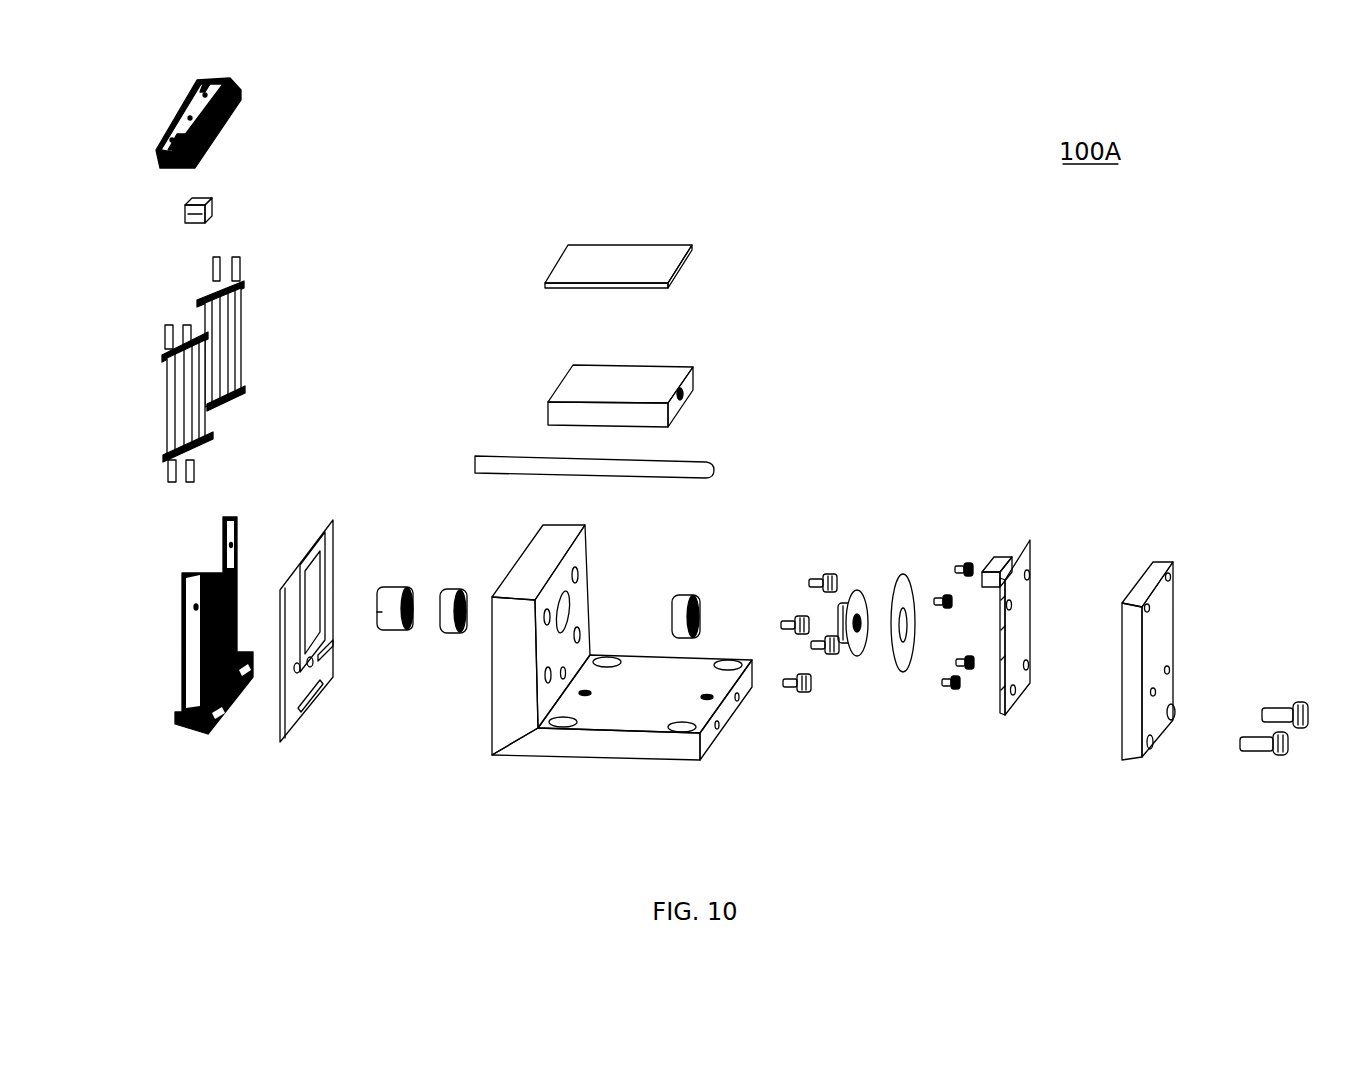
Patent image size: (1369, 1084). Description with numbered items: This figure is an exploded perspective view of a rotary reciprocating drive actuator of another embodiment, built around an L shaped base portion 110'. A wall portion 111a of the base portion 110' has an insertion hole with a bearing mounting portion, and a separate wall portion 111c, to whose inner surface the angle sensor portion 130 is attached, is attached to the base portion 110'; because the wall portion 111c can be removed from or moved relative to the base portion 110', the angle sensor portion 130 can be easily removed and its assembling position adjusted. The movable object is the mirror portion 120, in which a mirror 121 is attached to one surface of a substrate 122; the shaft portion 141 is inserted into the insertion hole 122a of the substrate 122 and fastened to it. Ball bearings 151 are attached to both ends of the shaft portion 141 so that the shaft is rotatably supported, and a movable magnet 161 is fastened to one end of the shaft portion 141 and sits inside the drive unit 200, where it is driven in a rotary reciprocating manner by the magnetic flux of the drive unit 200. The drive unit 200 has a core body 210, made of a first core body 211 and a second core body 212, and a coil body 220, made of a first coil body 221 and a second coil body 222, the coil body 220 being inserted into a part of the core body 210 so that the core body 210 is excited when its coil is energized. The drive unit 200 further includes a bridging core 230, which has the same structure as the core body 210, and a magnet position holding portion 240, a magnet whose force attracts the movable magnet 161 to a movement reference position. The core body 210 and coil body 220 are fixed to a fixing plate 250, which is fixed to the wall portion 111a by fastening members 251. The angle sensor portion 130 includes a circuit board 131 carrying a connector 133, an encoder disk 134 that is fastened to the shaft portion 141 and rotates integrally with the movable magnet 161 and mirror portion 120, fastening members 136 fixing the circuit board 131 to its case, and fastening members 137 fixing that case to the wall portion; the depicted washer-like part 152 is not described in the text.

The drive unit 200 is at (375, 805).
The core body 210 is at (154, 624).
The first core body 211 is at (188, 690).
The second core body 212 is at (222, 523).
The coil body 220 is at (195, 369).
The first coil body 221 is at (180, 400).
The second coil body 222 is at (238, 343).
The bridging core 230 is at (186, 111).
The magnet position holding portion 240 is at (185, 212).
The fixing plate 250 is at (313, 680).
The fastening members 251 is at (790, 682).
The L shaped base portion 110' is at (576, 666).
The wall portion 111a is at (517, 715).
The wall portion 111c is at (1130, 735).
The movable magnet 161 is at (392, 597).
The ball bearings 151 is at (452, 597).
The bushing 152 is at (860, 592).
The mirror portion 120 is at (798, 240).
The mirror 121 is at (660, 266).
The substrate 122 is at (674, 395).
The insertion hole 122a is at (672, 376).
The shaft portion 141 is at (690, 468).
The angle sensor portion 130 is at (892, 805).
The circuit board 131 is at (1012, 715).
The connector 133 is at (997, 567).
The encoder disk 134 is at (903, 672).
The fastening members 136 is at (948, 680).
The fastening members 137 is at (1288, 726).